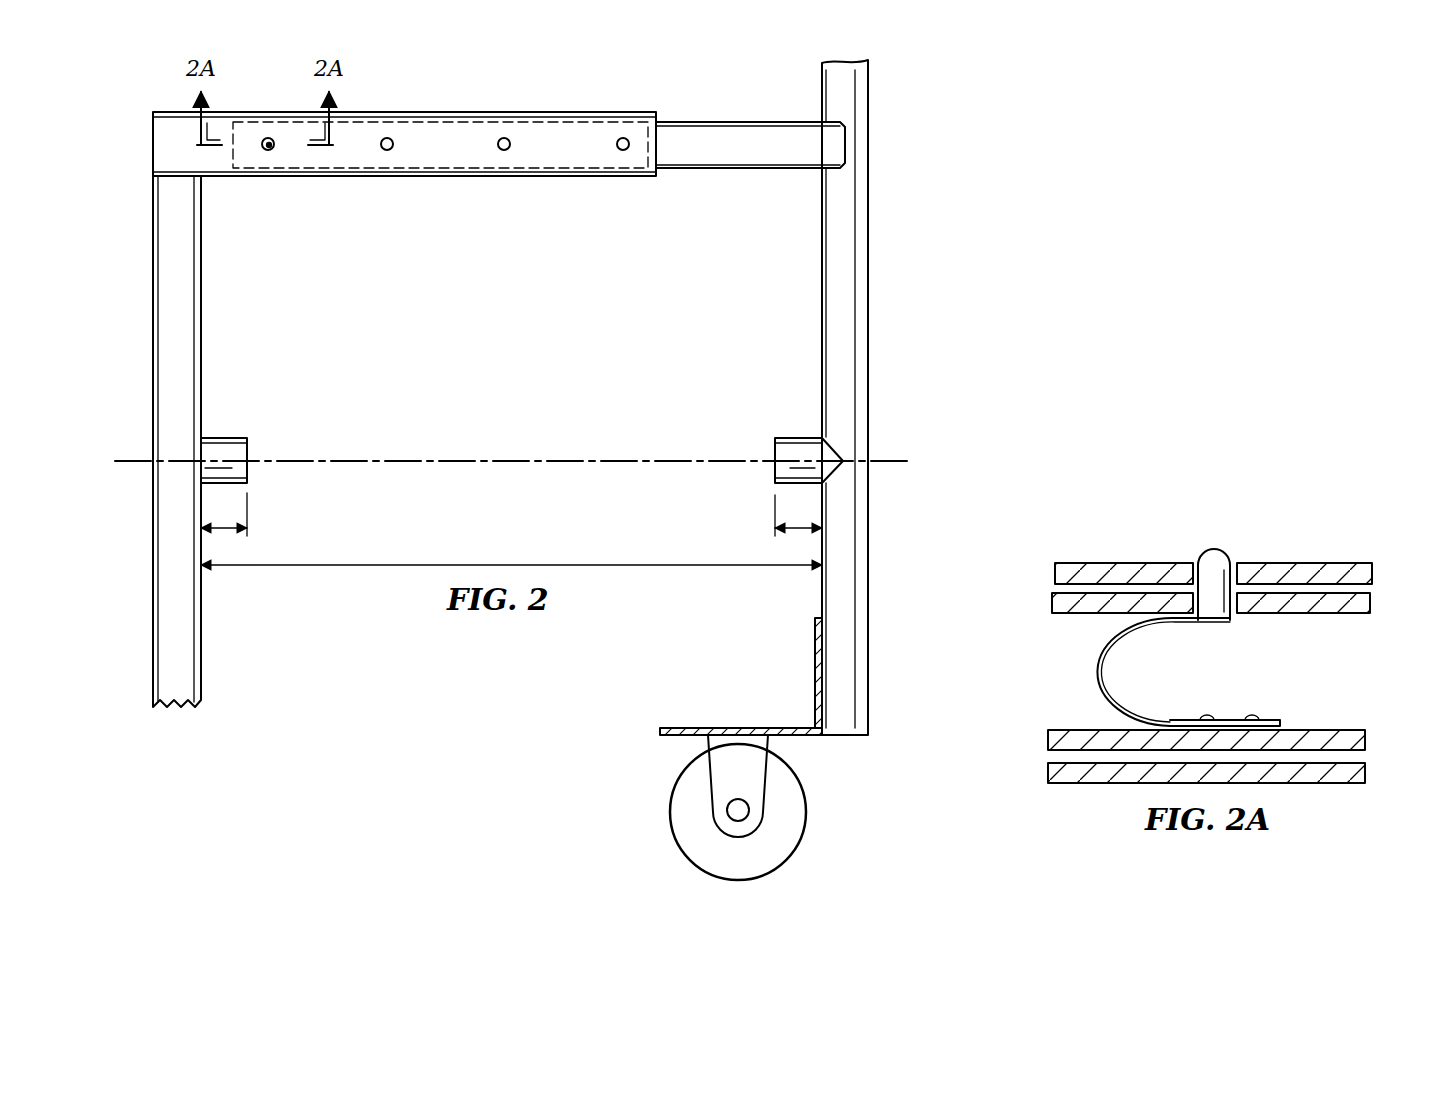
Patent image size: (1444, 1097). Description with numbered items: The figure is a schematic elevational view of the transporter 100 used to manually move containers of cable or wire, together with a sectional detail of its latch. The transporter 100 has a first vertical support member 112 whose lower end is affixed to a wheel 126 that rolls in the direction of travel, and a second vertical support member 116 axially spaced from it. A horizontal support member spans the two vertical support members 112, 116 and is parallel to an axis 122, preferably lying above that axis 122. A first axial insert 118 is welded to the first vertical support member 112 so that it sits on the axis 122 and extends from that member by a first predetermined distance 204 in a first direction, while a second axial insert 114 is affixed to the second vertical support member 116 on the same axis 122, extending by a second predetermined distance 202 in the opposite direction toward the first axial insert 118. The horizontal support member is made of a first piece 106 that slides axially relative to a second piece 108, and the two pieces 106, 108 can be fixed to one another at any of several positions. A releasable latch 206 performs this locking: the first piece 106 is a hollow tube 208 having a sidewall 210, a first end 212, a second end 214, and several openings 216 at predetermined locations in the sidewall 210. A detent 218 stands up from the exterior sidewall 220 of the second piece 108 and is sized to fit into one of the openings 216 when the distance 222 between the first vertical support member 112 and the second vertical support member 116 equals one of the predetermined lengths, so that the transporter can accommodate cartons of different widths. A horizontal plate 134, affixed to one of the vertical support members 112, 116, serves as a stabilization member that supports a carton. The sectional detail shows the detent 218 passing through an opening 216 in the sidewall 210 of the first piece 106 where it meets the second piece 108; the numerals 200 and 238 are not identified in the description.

In FIG. 2, the transporter 100 is at (966, 170).
In FIG. 2, the first piece 106 is at (407, 112).
In FIG. 2A, the first piece 106 is at (1068, 563).
In FIG. 2, the second piece 108 is at (752, 122).
In FIG. 2A, the second piece 108 is at (1063, 613).
In FIG. 2, the first vertical support member 112 is at (822, 328).
In FIG. 2, the second axial insert 114 is at (222, 438).
In FIG. 2, the second vertical support member 116 is at (201, 328).
In FIG. 2, the first axial insert 118 is at (790, 438).
In FIG. 2, the axis 122 is at (540, 461).
In FIG. 2, the wheel 126 is at (670, 808).
In FIG. 2, the horizontal plate 134 is at (687, 728).
In FIG. 2, the frame assembly 200 is at (895, 344).
In FIG. 2, the second predetermined distance 202 is at (247, 532).
In FIG. 2, the first predetermined distance 204 is at (775, 532).
In FIG. 2, the releasable latch 206 is at (462, 104).
In FIG. 2A, the releasable latch 206 is at (1268, 474).
In FIG. 2, the hollow tube 208 is at (272, 112).
In FIG. 2, the sidewall 210 is at (422, 147).
In FIG. 2A, the sidewall 210 is at (1372, 575).
In FIG. 2, the first end 212 is at (640, 178).
In FIG. 2, the second end 214 is at (217, 180).
In FIG. 2, the openings 216 is at (503, 137).
In FIG. 2A, the openings 216 is at (1237, 565).
In FIG. 2A, the detent 218 is at (1213, 560).
In FIG. 2A, the exterior sidewall 220 is at (1135, 598).
In FIG. 2, the distance 222 is at (497, 565).
In FIG. 2A, the spring clip 238 is at (1237, 622).